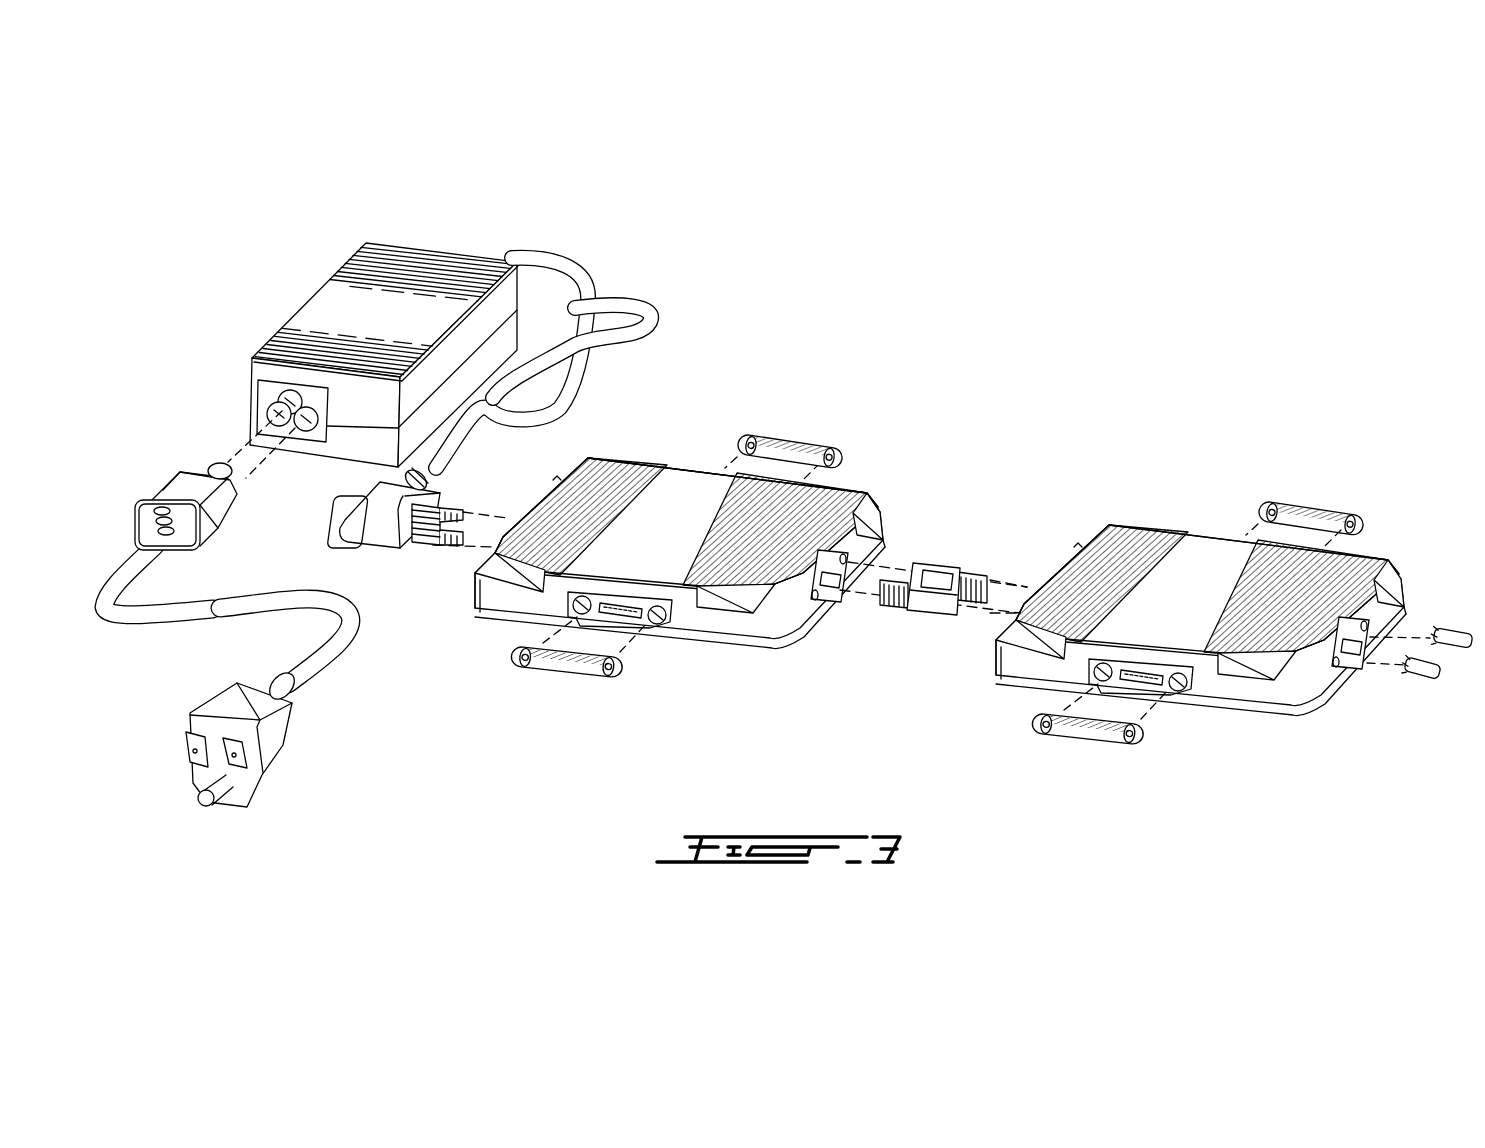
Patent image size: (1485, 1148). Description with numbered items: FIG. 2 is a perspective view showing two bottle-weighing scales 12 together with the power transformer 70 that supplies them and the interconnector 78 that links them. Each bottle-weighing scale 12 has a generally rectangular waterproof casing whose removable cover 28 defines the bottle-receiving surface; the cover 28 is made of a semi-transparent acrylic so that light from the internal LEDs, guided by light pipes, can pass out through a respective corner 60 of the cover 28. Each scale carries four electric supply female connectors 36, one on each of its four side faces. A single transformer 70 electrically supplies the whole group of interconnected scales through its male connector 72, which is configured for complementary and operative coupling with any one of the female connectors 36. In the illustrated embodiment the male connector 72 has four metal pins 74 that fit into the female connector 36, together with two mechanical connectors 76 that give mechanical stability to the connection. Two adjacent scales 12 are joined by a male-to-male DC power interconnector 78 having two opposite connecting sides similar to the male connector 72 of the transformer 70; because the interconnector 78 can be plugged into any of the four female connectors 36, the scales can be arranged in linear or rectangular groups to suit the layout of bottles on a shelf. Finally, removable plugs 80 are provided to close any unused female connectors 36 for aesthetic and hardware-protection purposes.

The bottle-weighing scale 12 is at (684, 462).
The removable cover 28 is at (880, 496).
The electric supply female connector 36 is at (623, 614).
The corner of the cover 60 is at (812, 598).
The transformer 70 is at (436, 256).
The male connector 72 is at (383, 548).
The metal pins 74 is at (448, 542).
The mechanical connectors 76 is at (447, 502).
The male-to-male DC power interconnector 78 is at (951, 561).
The removable plug 80 is at (790, 446).